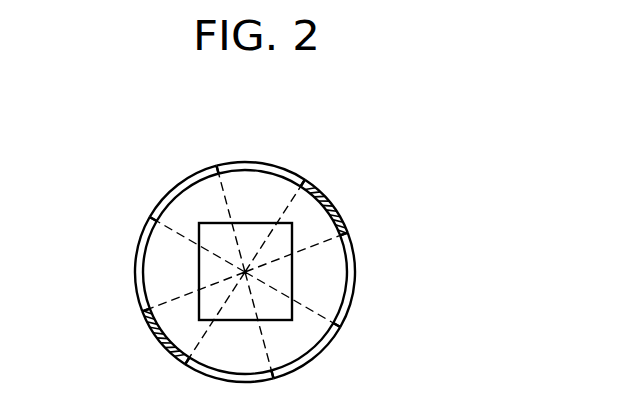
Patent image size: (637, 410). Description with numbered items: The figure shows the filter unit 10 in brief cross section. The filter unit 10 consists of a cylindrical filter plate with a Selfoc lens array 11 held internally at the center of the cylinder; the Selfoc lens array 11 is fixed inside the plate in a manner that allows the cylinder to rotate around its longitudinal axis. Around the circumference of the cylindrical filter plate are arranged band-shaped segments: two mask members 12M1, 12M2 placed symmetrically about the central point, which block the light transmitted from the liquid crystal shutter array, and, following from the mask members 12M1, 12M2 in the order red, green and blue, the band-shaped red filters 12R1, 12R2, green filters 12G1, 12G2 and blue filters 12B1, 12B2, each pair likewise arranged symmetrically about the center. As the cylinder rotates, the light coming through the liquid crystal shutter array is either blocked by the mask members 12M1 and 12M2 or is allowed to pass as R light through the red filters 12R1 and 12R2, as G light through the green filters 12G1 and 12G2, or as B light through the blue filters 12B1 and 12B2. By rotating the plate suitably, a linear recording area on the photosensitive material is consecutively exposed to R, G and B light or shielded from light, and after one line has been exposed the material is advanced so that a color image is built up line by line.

The filter unit 10 is at (333, 150).
The Selfoc lens array 11 is at (292, 267).
The red filter 12R1 is at (352, 300).
The red filter 12R2 is at (138, 252).
The green filter 12G1 is at (330, 342).
The green filter 12G2 is at (199, 170).
The blue filter 12B1 is at (255, 382).
The blue filter 12B2 is at (267, 167).
The mask member 12M1 is at (323, 193).
The mask member 12M2 is at (155, 347).